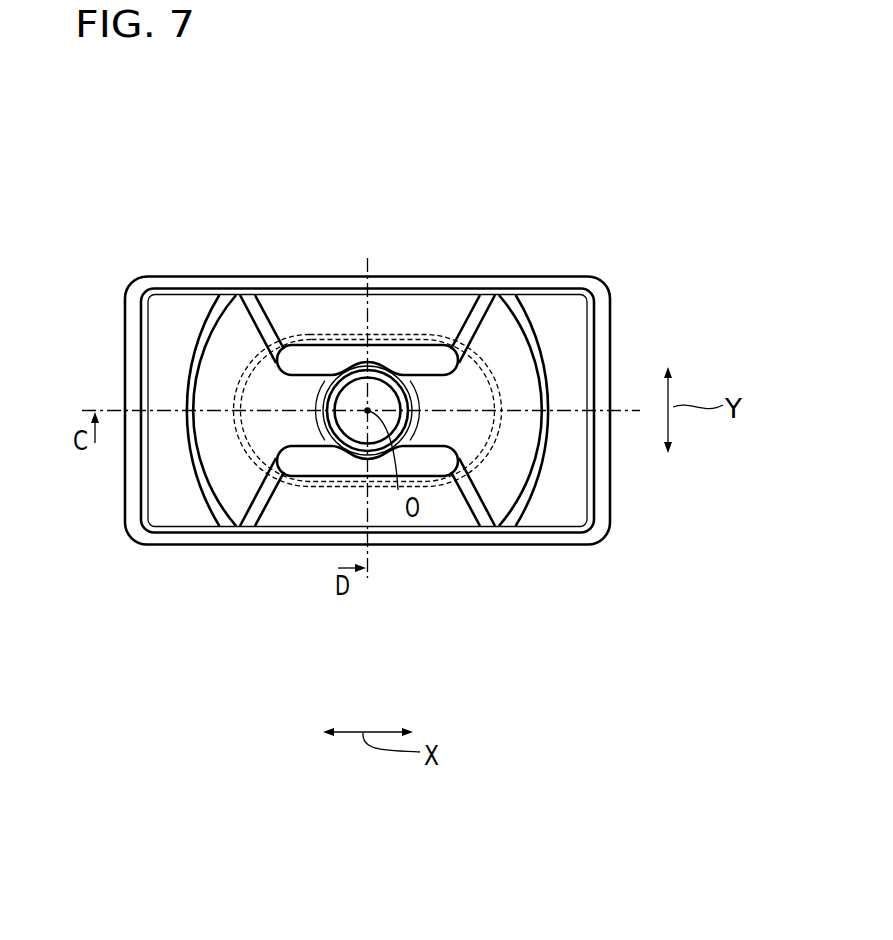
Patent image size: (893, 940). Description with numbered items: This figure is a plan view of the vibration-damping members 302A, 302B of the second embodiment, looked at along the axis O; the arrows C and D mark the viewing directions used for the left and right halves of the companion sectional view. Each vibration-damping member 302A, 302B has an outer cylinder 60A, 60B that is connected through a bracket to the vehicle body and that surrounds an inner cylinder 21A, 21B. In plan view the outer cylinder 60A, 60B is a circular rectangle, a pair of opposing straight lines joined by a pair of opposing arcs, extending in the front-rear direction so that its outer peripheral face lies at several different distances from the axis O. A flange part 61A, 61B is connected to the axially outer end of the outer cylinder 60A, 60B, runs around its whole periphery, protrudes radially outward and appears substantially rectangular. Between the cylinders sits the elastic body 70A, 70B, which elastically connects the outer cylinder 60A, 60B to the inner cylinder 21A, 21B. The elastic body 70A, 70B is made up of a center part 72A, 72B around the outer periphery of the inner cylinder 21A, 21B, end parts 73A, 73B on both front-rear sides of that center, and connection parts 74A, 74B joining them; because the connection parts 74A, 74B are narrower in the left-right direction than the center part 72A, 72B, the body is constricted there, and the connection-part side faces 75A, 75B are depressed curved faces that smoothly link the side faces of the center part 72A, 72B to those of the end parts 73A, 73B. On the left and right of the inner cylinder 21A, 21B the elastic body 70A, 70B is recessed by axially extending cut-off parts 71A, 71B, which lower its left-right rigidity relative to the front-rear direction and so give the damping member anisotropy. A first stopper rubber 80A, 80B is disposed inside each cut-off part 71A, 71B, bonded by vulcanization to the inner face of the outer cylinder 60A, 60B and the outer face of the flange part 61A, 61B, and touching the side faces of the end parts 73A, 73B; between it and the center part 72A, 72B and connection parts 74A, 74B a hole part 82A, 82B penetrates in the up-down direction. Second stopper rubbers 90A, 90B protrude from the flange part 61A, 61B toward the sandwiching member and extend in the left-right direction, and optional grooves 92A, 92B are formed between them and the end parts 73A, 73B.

The vibration-damping member 302A is at (458, 302).
The vibration-damping member 302B is at (606, 113).
The elastic body 70A is at (396, 401).
The elastic body 70B is at (543, 324).
The end part 73A is at (414, 391).
The end part 73B is at (513, 357).
The connection-part side face 75A is at (381, 433).
The connection-part side face 75B is at (495, 625).
The cut-off part 71A is at (355, 367).
The cut-off part 71B is at (293, 563).
The hole part 82A is at (367, 430).
The hole part 82B is at (322, 630).
The center part 72A is at (398, 324).
The center part 72B is at (375, 367).
The inner cylinder 21A is at (433, 285).
The inner cylinder 21B is at (385, 375).
The first stopper rubber 80A is at (368, 382).
The first stopper rubber 80B is at (407, 590).
The connection part 74A is at (381, 507).
The connection part 74B is at (293, 415).
The groove 92A is at (388, 410).
The groove 92B is at (540, 370).
The second stopper rubber 90A is at (392, 420).
The second stopper rubber 90B is at (567, 387).
The flange part 61A is at (459, 411).
The flange part 61B is at (602, 453).
The outer cylinder 60A is at (496, 429).
The outer cylinder 60B is at (497, 427).